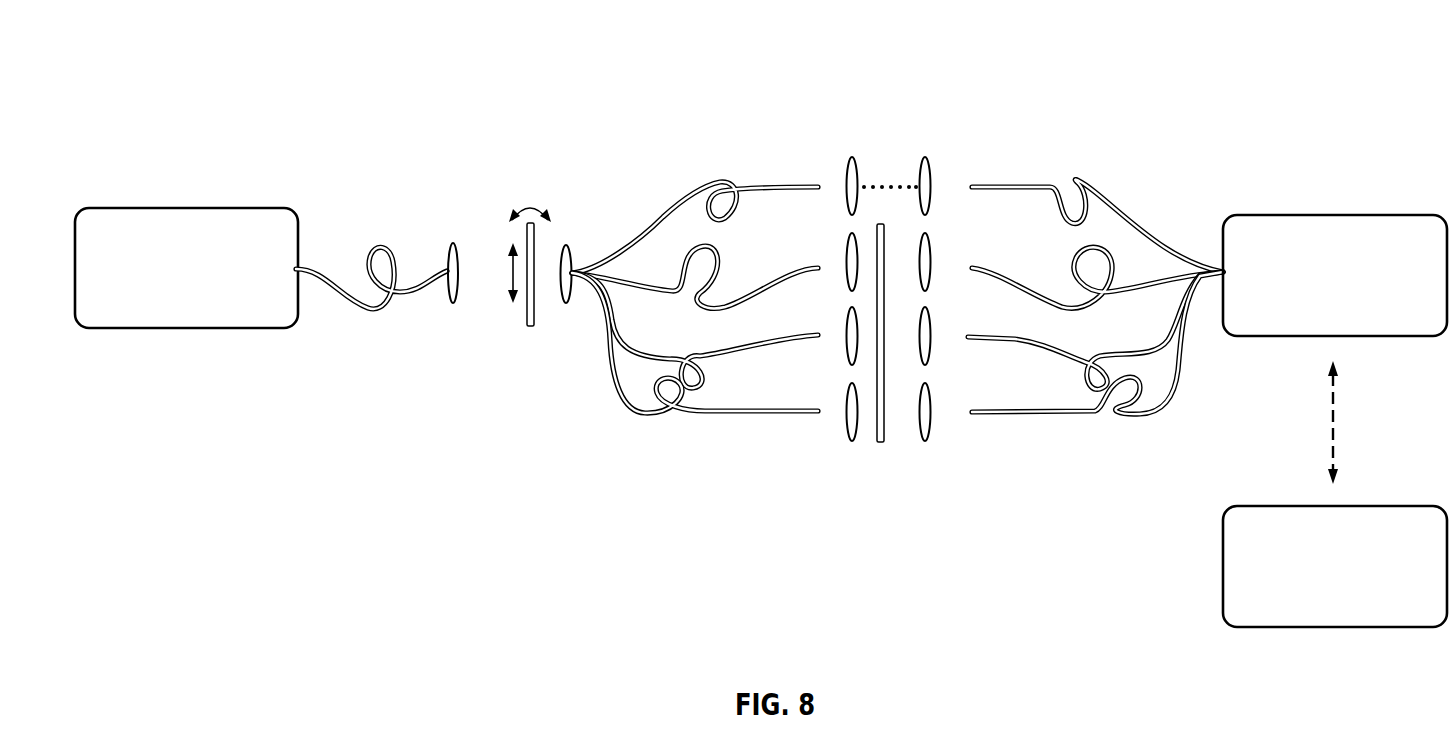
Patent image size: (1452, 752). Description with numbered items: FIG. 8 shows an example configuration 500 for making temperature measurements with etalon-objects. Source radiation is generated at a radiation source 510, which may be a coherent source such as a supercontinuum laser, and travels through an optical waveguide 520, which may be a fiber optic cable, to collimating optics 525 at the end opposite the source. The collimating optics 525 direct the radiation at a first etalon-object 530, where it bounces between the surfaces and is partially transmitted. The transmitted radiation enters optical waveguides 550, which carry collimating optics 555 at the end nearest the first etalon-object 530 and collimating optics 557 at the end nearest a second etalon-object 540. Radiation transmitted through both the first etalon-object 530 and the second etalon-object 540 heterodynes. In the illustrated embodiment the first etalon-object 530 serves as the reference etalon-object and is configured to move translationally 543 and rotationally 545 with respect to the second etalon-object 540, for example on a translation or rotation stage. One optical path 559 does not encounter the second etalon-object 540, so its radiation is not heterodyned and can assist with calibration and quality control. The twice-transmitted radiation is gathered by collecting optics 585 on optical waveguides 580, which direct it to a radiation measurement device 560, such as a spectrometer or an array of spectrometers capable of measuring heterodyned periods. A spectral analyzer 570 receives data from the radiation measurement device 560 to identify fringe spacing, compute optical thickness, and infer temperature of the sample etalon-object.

The configuration 500 is at (207, 66).
The radiation source 510 is at (143, 208).
The optical waveguide 520 is at (370, 312).
The collimating optics 525 is at (447, 268).
The first etalon-object 530 is at (529, 334).
The second etalon-object 540 is at (878, 450).
The translational movement 543 is at (510, 262).
The rotational movement 545 is at (530, 206).
The optical waveguides 550 is at (758, 183).
The collimating optics 555 is at (568, 305).
The collimating optics 557 is at (847, 173).
The optical path 559 is at (891, 158).
The radiation measurement device 560 is at (1378, 215).
The spectral analyzer 570 is at (1378, 506).
The optical waveguides 580 is at (1030, 183).
The collecting optics 585 is at (931, 176).